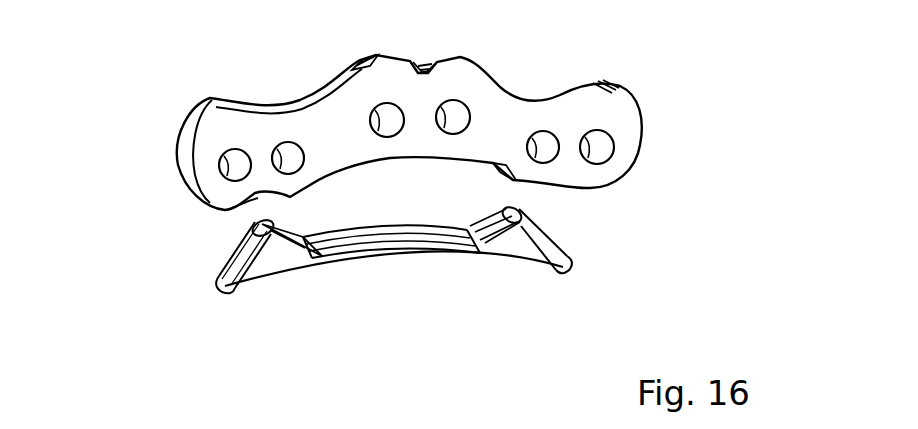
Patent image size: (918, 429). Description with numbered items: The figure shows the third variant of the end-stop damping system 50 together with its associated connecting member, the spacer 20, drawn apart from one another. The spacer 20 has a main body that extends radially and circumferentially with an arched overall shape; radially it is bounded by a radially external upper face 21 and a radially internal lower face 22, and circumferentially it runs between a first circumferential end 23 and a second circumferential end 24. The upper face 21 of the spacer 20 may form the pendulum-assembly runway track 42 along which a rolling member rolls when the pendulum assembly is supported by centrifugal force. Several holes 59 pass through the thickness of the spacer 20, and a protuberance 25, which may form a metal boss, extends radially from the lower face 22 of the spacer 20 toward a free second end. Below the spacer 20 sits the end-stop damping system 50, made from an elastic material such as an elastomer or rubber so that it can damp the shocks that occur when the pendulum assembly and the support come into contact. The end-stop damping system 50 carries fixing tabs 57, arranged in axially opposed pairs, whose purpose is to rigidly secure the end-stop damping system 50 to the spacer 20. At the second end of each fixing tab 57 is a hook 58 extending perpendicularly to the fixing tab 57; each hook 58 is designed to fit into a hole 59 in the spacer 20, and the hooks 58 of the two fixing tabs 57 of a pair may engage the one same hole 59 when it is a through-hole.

The spacer 20 is at (637, 123).
The radially external upper face 21 is at (376, 55).
The radially internal lower face 22 is at (243, 206).
The first circumferential end 23 is at (180, 170).
The second circumferential end 24 is at (637, 152).
The protuberance 25 is at (540, 182).
The pendulum-assembly runway track 42 is at (538, 98).
The end-stop damping system 50 is at (403, 252).
The fixing tab 57 is at (290, 262).
The hook 58 is at (525, 217).
The hole 59 is at (280, 153).